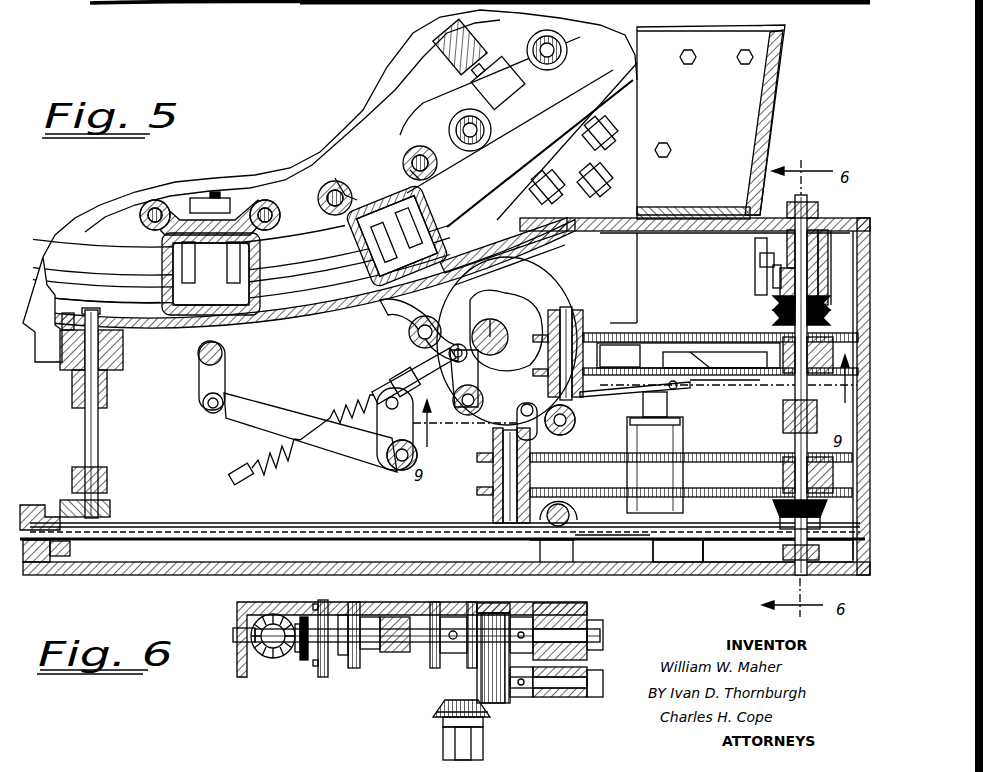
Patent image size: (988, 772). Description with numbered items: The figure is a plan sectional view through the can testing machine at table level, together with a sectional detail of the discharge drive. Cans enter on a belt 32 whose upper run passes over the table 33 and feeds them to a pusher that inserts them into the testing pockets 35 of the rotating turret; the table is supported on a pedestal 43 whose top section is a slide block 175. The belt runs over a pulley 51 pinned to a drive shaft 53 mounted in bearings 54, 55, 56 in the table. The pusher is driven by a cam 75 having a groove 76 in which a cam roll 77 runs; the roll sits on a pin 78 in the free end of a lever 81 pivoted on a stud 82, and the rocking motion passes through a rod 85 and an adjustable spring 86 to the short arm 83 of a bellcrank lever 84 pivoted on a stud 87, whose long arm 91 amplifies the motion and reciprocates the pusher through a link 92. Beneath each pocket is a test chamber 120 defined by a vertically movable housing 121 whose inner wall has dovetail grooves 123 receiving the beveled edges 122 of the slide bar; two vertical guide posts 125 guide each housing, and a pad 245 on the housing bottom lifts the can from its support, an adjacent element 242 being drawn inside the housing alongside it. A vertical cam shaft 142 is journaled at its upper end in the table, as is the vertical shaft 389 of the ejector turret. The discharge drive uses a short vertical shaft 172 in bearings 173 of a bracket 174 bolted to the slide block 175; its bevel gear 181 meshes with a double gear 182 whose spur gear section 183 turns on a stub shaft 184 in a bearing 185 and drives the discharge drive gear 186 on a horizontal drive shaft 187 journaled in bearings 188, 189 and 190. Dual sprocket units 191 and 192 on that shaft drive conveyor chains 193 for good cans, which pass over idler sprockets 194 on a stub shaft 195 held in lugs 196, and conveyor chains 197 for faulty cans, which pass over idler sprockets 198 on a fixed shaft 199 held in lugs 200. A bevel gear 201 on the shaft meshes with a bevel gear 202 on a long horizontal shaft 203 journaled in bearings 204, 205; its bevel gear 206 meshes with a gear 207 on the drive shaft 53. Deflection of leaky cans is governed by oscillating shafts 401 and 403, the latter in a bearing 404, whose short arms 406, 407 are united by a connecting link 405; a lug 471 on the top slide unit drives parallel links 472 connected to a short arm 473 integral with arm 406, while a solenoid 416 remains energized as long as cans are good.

In FIG. 5, the belt 32 is at (45, 364).
In FIG. 5, the table 33 is at (78, 576).
In FIG. 6, the table 33 is at (237, 607).
In FIG. 5, the testing pocket 35 is at (160, 250).
In FIG. 5, the pedestal 43 is at (711, 122).
In FIG. 5, the pulley 51 is at (65, 372).
In FIG. 5, the drive shaft 53 is at (98, 432).
In FIG. 5, the bearing 54 is at (84, 306).
In FIG. 5, the bearing 55 is at (108, 398).
In FIG. 5, the bearing 56 is at (107, 476).
In FIG. 5, the cam 75 is at (545, 235).
In FIG. 5, the groove 76 is at (552, 252).
In FIG. 5, the cam roll 77 is at (458, 344).
In FIG. 5, the pin 78 is at (507, 341).
In FIG. 5, the lever 81 is at (466, 395).
In FIG. 5, the stud 82 is at (468, 412).
In FIG. 5, the short arm 83 is at (395, 429).
In FIG. 5, the bellcrank lever 84 is at (393, 466).
In FIG. 5, the rod 85 is at (345, 400).
In FIG. 5, the spring 86 is at (264, 466).
In FIG. 5, the stud 87 is at (403, 471).
In FIG. 5, the long arm 91 is at (310, 432).
In FIG. 5, the link 92 is at (225, 383).
In FIG. 5, the test chamber 120 is at (185, 290).
In FIG. 5, the housing 121 is at (256, 268).
In FIG. 5, the beveled edges 122 is at (215, 205).
In FIG. 5, the dovetail grooves 123 is at (262, 199).
In FIG. 5, the vertical guide posts 125 is at (155, 199).
In FIG. 5, the vertical cam shaft 142 is at (490, 335).
In FIG. 6, the short vertical shaft 172 is at (445, 742).
In FIG. 6, the bearings 173 is at (445, 721).
In FIG. 5, the bracket 174 is at (758, 262).
In FIG. 5, the slide block 175 is at (725, 248).
In FIG. 5, the bevel gear 181 is at (775, 318).
In FIG. 6, the bevel gear 181 is at (440, 708).
In FIG. 5, the double gear 182 is at (775, 305).
In FIG. 6, the double gear 182 is at (495, 705).
In FIG. 6, the spur gear section 183 is at (510, 700).
In FIG. 6, the stub shaft 184 is at (565, 697).
In FIG. 6, the bearing 185 is at (582, 700).
In FIG. 5, the discharge drive gear 186 is at (775, 280).
In FIG. 6, the discharge drive gear 186 is at (500, 610).
In FIG. 5, the horizontal drive shaft 187 is at (796, 436).
In FIG. 6, the horizontal drive shaft 187 is at (370, 652).
In FIG. 5, the bearing 188 is at (829, 250).
In FIG. 6, the bearing 188 is at (557, 622).
In FIG. 5, the bearing 189 is at (783, 414).
In FIG. 6, the bearing 189 is at (395, 654).
In FIG. 5, the bearing 190 is at (818, 556).
In FIG. 6, the bearing 190 is at (240, 650).
In FIG. 5, the dual sprocket unit 191 is at (832, 348).
In FIG. 6, the dual sprocket unit 191 is at (455, 654).
In FIG. 5, the dual sprocket unit 192 is at (818, 472).
In FIG. 6, the dual sprocket unit 192 is at (342, 656).
In FIG. 5, the conveyor chains 193 is at (655, 333).
In FIG. 6, the conveyor chains 193 is at (460, 590).
In FIG. 5, the idler sprockets 194 is at (584, 338).
In FIG. 5, the stub shaft 195 is at (548, 316).
In FIG. 5, the lugs 196 is at (588, 300).
In FIG. 5, the conveyor chains 197 is at (676, 551).
In FIG. 6, the conveyor chains 197 is at (324, 680).
In FIG. 5, the idler sprockets 198 is at (492, 470).
In FIG. 5, the fixed shaft 199 is at (492, 498).
In FIG. 5, the lugs 200 is at (487, 456).
In FIG. 5, the bevel gear 201 is at (815, 512).
In FIG. 6, the bevel gear 201 is at (303, 662).
In FIG. 5, the bevel gear 202 is at (776, 508).
In FIG. 6, the bevel gear 202 is at (272, 660).
In FIG. 5, the long horizontal shaft 203 is at (442, 520).
In FIG. 5, the bearing 204 is at (722, 570).
In FIG. 5, the bearing 205 is at (38, 500).
In FIG. 5, the bevel gear 206 is at (72, 549).
In FIG. 5, the gear 207 is at (110, 508).
In FIG. 5, the slot 242 is at (219, 264).
In FIG. 5, the pad 245 is at (205, 262).
In FIG. 5, the vertical shaft 389 is at (420, 346).
In FIG. 5, the oscillating shaft 401 is at (565, 432).
In FIG. 5, the short oscillating shaft 403 is at (570, 513).
In FIG. 5, the bearing 404 is at (575, 540).
In FIG. 5, the connecting link 405 is at (545, 468).
In FIG. 5, the short arm 406 is at (521, 410).
In FIG. 5, the short arm 407 is at (540, 522).
In FIG. 5, the solenoid 416 is at (690, 470).
In FIG. 5, the lug 471 is at (722, 376).
In FIG. 5, the parallel links 472 is at (722, 383).
In FIG. 5, the short arm 473 is at (575, 418).